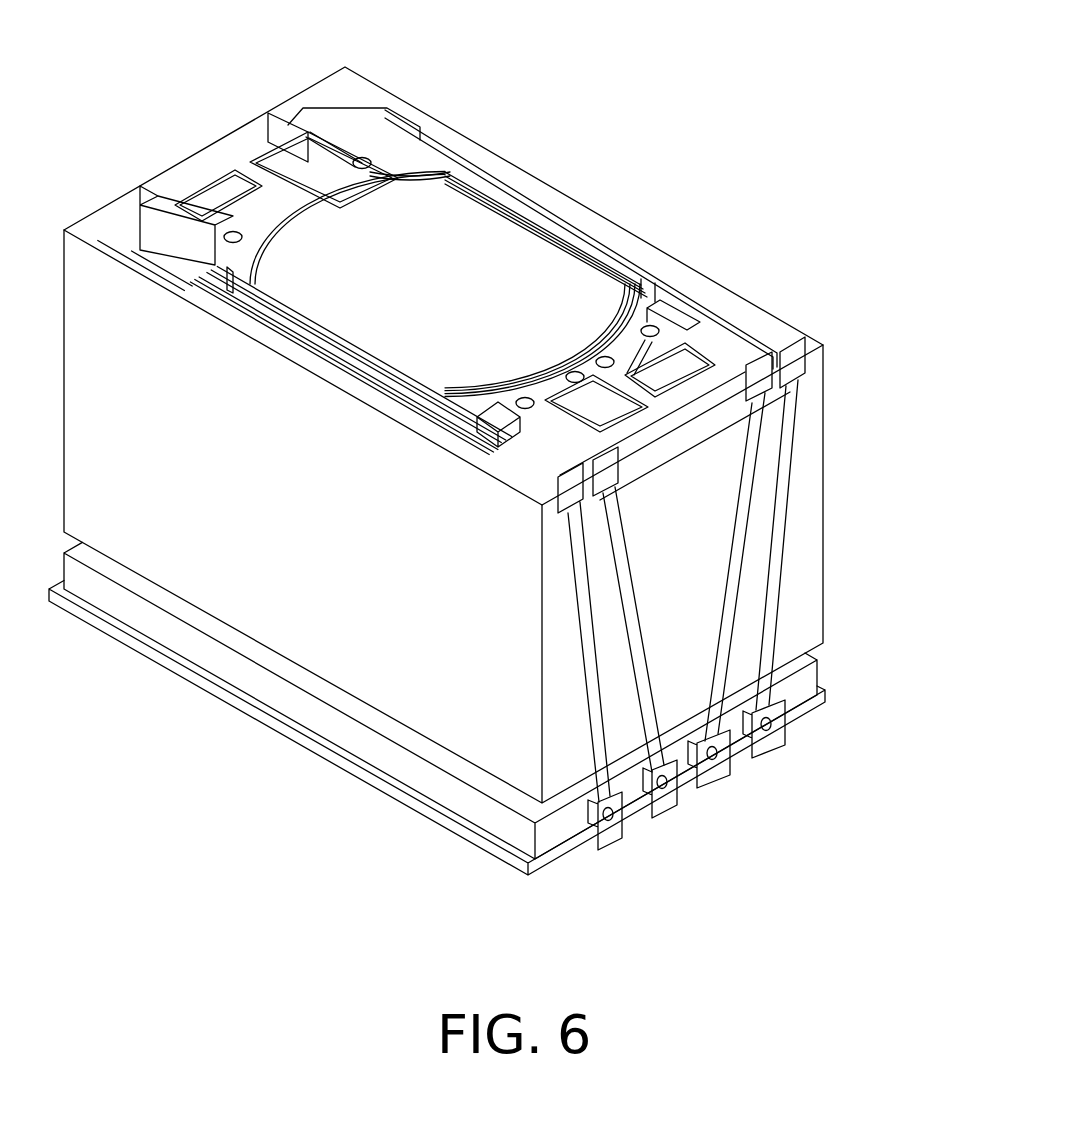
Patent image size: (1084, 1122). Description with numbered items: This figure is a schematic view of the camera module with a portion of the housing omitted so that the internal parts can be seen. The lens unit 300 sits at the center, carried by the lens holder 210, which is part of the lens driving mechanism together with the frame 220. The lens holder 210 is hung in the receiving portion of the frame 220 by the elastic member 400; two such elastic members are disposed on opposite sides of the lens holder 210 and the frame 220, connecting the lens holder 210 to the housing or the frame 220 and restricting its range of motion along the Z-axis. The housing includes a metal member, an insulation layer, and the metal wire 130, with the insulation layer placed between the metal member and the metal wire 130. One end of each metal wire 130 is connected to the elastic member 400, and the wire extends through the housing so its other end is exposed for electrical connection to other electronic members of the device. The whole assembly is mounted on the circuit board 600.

The metal wire 130 is at (743, 517).
The lens holder 210 is at (285, 212).
The frame 220 is at (105, 228).
The lens unit 300 is at (477, 237).
The elastic member 400 is at (747, 333).
The circuit board 600 is at (300, 705).